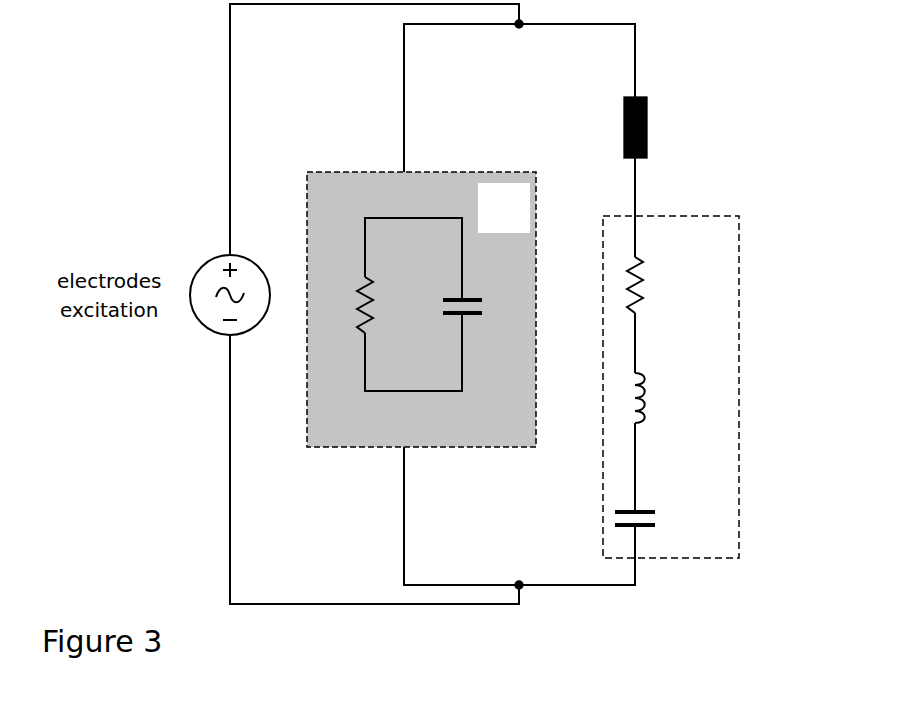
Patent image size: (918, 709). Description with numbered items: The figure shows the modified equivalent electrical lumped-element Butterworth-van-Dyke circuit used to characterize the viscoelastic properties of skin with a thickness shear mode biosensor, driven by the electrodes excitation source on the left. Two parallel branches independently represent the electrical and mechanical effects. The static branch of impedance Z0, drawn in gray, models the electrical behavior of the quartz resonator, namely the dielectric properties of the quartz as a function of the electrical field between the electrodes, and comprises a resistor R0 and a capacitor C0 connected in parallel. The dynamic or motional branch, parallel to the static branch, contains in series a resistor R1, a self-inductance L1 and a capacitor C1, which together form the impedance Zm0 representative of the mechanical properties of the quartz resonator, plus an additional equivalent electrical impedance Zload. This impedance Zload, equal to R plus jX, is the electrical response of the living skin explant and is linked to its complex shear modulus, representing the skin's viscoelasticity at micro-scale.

The additional equivalent electrical impedance Zload is at (672, 127).
The static branch impedance Z0 is at (421, 309).
The resistor of the static branch R0 is at (343, 305).
The capacitor of the static branch C0 is at (481, 307).
The quartz motional impedance Zm0 is at (671, 358).
The resistor of the dynamic branch R1 is at (664, 285).
The self-inductance of the dynamic branch L1 is at (667, 398).
The capacitor of the dynamic branch C1 is at (659, 522).